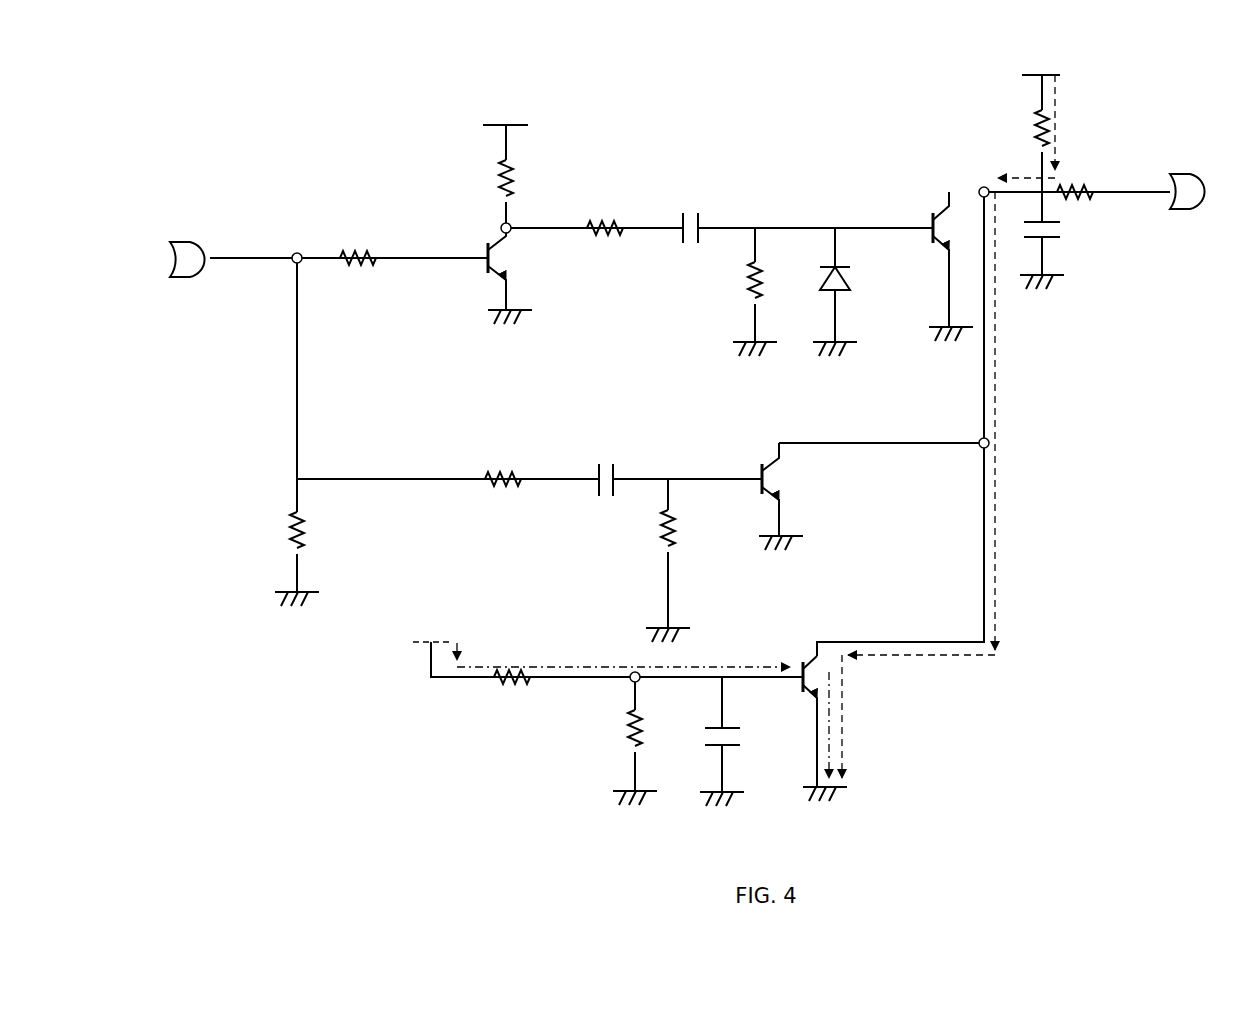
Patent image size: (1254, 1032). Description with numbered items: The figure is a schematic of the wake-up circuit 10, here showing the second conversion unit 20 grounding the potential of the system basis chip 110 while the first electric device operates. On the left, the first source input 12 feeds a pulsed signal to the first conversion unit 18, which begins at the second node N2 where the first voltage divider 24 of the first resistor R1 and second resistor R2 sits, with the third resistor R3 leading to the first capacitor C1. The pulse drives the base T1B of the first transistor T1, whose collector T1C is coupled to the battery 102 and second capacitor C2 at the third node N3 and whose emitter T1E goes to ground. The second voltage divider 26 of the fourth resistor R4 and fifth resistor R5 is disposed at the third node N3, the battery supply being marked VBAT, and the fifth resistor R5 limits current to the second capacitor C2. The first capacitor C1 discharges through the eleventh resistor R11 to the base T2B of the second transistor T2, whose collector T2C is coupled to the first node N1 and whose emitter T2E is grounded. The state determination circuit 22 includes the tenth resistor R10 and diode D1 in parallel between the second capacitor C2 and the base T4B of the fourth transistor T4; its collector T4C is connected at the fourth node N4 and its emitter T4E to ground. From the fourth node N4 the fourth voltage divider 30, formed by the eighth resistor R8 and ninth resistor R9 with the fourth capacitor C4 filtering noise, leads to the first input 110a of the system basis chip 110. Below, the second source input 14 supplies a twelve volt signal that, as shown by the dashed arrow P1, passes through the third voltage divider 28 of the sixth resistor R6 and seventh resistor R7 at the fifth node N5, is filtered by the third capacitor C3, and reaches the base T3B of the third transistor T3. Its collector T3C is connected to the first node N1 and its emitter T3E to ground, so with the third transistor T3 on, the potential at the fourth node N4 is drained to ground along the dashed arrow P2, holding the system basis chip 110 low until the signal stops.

The wake-up circuit 10 is at (212, 100).
The first source input 12 is at (199, 240).
The second source input 14 is at (430, 637).
The first conversion unit 18 is at (328, 394).
The second conversion unit 20 is at (522, 776).
The state determination circuit 22 is at (836, 134).
The first voltage divider 24 is at (282, 251).
The second voltage divider 26 is at (523, 198).
The third voltage divider 28 is at (622, 690).
The fourth voltage divider 30 is at (1050, 222).
The battery 102 is at (535, 108).
The system basis chip 110 is at (1195, 172).
The first input 110a is at (1160, 197).
The first resistor R1 is at (366, 268).
The second resistor R2 is at (302, 531).
The third resistor R3 is at (497, 470).
The fourth resistor R4 is at (500, 178).
The fifth resistor R5 is at (618, 222).
The sixth resistor R6 is at (505, 686).
The seventh resistor R7 is at (630, 750).
The eighth resistor R8 is at (1038, 125).
The ninth resistor R9 is at (1080, 182).
The tenth resistor R10 is at (746, 280).
The eleventh resistor R11 is at (663, 525).
The first capacitor C1 is at (612, 460).
The second capacitor C2 is at (699, 210).
The third capacitor C3 is at (718, 728).
The fourth capacitor C4 is at (1050, 233).
The diode D1 is at (822, 275).
The first transistor T1 is at (462, 253).
The base T1B is at (484, 264).
The collector T1C is at (510, 240).
The emitter T1E is at (510, 284).
The second transistor T2 is at (748, 466).
The base T2B is at (757, 493).
The collector T2C is at (783, 470).
The emitter T2E is at (783, 500).
The third transistor T3 is at (784, 654).
The base T3B is at (800, 681).
The collector T3C is at (822, 660).
The emitter T3E is at (822, 702).
The fourth transistor T4 is at (908, 222).
The base T4B is at (930, 242).
The collector T4C is at (942, 210).
The emitter T4E is at (960, 252).
The first node N1 is at (990, 443).
The second node N2 is at (297, 250).
The third node N3 is at (512, 223).
The fourth node N4 is at (985, 186).
The fifth node N5 is at (633, 670).
The dashed arrow P1 is at (553, 664).
The dashed arrow P2 is at (998, 552).
The battery voltage VBAT is at (774, 84).